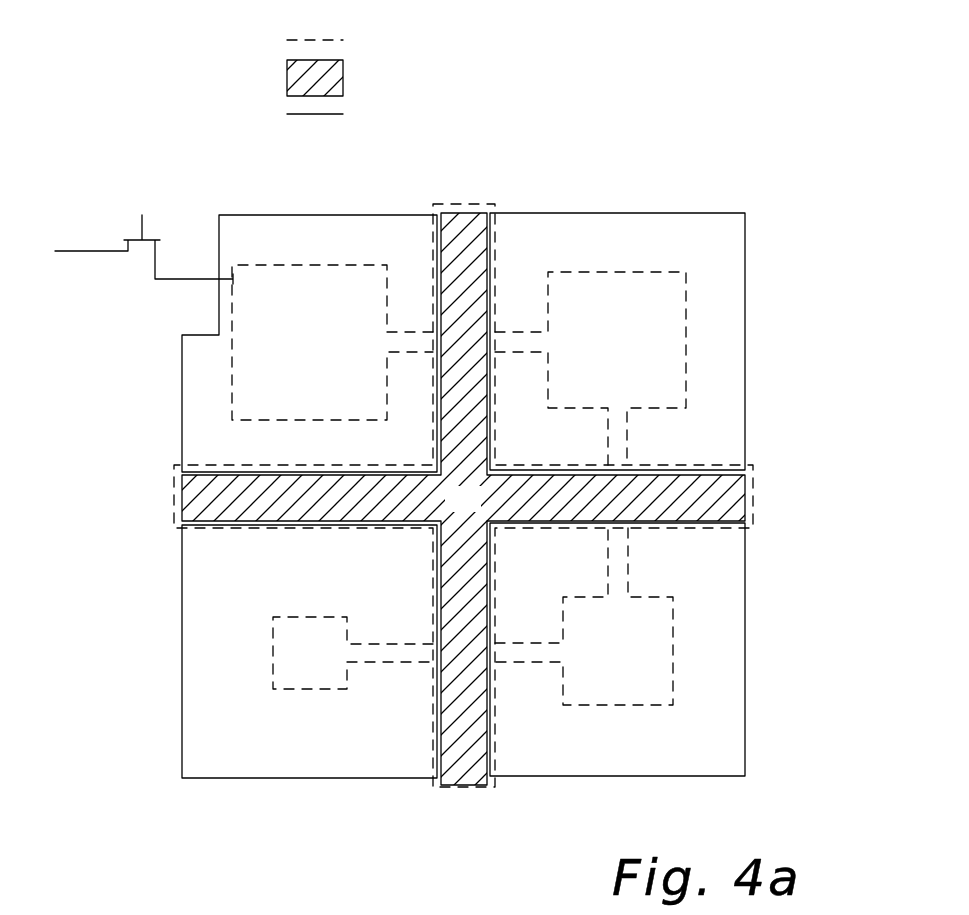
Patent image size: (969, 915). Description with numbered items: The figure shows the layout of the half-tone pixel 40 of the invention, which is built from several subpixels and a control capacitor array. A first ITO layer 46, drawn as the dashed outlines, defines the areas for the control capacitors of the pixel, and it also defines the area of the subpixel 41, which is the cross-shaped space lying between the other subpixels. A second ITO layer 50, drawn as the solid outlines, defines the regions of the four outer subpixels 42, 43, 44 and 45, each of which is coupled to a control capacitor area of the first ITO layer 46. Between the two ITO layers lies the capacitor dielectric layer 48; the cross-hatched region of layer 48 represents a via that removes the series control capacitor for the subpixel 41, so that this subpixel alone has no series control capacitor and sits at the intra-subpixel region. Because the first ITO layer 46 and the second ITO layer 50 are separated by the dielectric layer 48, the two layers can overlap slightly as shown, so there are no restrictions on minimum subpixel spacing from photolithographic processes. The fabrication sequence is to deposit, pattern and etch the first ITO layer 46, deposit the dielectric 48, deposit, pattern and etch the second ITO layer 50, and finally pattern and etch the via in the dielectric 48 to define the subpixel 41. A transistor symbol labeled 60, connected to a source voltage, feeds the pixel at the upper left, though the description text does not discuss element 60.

The half-tone pixel 40 is at (728, 178).
The subpixel 41 is at (745, 487).
The subpixel 42 is at (253, 235).
The subpixel 43 is at (622, 222).
The subpixel 44 is at (730, 637).
The subpixel 45 is at (200, 685).
The first ITO layer 46 is at (288, 40).
The capacitor dielectric layer 48 is at (287, 78).
The second ITO layer 50 is at (287, 114).
The transistor 60 is at (155, 245).